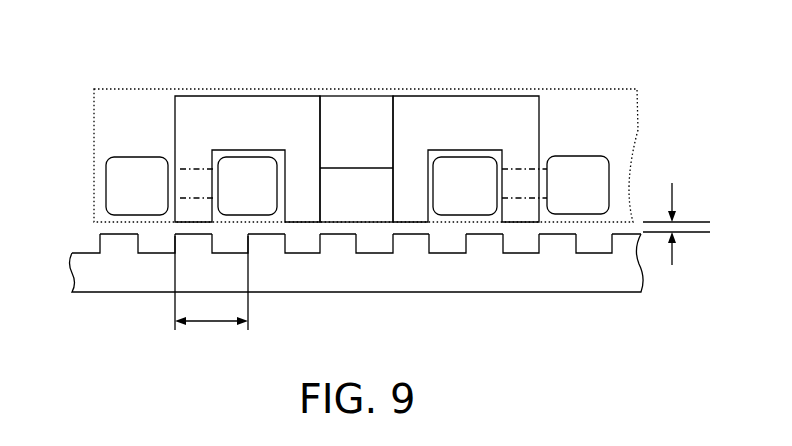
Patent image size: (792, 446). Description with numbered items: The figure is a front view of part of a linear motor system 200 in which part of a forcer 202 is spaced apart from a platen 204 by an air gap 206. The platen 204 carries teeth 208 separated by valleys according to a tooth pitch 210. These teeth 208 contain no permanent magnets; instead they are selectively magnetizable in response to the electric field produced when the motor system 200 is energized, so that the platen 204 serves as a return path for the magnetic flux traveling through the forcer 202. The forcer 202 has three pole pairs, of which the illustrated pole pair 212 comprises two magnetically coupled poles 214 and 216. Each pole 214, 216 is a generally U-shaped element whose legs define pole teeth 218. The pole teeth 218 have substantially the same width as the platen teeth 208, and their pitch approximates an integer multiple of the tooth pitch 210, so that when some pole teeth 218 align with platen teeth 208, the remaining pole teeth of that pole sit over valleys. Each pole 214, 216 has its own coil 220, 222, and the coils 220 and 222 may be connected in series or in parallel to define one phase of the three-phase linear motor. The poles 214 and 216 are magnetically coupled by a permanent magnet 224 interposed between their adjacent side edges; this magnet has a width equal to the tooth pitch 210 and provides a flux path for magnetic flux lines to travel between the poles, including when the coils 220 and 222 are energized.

The motor system 200 is at (405, 128).
The forcer 202 is at (641, 136).
The platen 204 is at (393, 278).
The air gap 206 is at (683, 258).
The teeth 208 is at (272, 235).
The tooth pitch 210 is at (213, 325).
The pole pair 212 is at (361, 86).
The pole 214 is at (226, 133).
The pole 216 is at (449, 133).
The pole teeth 218 is at (398, 188).
The coil 220 is at (116, 194).
The coil 222 is at (449, 194).
The permanent magnet 224 is at (338, 105).